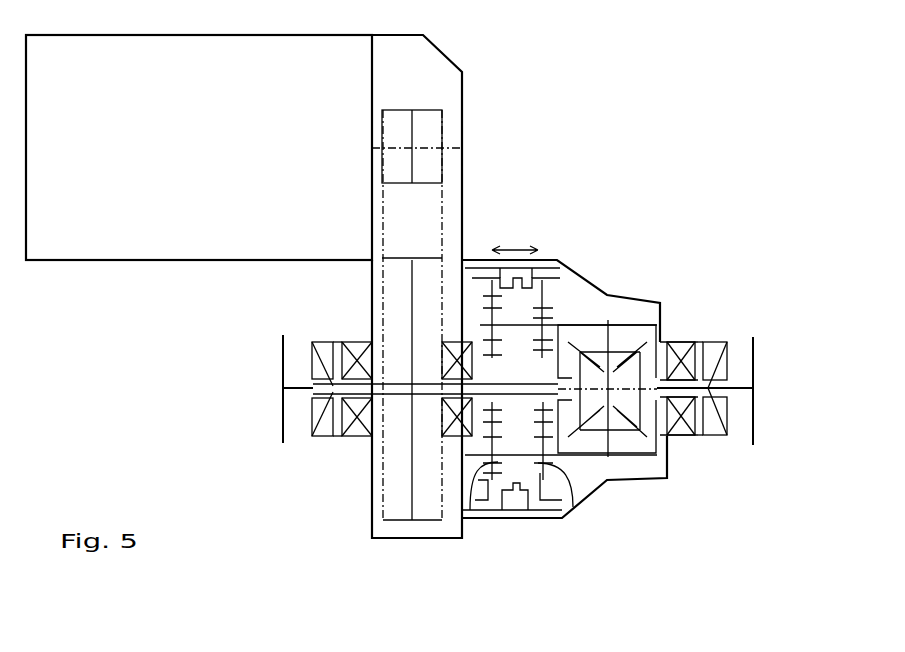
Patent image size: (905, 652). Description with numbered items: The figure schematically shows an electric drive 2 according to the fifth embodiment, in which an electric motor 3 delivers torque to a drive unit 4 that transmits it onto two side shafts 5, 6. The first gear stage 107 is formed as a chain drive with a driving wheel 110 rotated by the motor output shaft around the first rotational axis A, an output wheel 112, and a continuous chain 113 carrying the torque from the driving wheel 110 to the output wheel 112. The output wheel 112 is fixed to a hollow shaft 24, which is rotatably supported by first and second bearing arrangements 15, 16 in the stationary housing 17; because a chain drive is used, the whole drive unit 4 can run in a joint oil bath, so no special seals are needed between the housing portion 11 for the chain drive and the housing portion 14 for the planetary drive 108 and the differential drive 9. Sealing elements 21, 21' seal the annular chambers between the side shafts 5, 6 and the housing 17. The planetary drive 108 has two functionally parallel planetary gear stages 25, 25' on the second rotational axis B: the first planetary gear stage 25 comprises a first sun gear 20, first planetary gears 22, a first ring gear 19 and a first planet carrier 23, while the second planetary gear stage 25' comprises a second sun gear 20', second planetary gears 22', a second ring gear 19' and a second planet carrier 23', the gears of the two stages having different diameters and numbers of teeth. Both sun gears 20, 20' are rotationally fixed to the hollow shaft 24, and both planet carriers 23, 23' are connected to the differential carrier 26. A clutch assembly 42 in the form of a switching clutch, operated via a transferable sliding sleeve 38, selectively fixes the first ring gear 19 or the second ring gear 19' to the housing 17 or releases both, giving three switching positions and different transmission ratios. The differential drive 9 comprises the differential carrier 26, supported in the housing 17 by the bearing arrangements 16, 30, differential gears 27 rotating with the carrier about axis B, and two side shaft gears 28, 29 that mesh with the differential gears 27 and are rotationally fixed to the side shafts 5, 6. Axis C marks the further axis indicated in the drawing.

The electric drive 2 is at (651, 90).
The electric motor 3 is at (208, 157).
The drive unit 4 is at (545, 126).
The side shaft 5 is at (740, 390).
The side shaft 6 is at (292, 383).
The differential drive 9 is at (627, 463).
The housing portion 11 is at (464, 86).
The second housing portion 14 is at (646, 293).
The first bearing arrangement 15 is at (358, 347).
The second bearing arrangement 16 is at (440, 432).
The stationary housing 17 is at (464, 163).
The first ring gear 19 is at (465, 545).
The second ring gear 19' is at (582, 517).
The first sun gear 20 is at (561, 441).
The second sun gear 20' is at (568, 325).
The sealing element 21 is at (723, 365).
The sealing element 21' is at (320, 362).
The first planetary gears 22 is at (451, 532).
The second planetary gears 22' is at (604, 505).
The first planet carrier 23 is at (559, 329).
The second planet carrier 23' is at (608, 334).
The hollow shaft 24 is at (380, 438).
The first planetary gear stage 25 is at (512, 536).
The second planetary gear stage 25' is at (560, 526).
The differential carrier 26 is at (643, 455).
The differential gears 27 is at (618, 365).
The side shaft gear 28 is at (645, 358).
The side shaft gear 29 is at (590, 332).
The bearing arrangement 30 is at (685, 437).
The sliding sleeve 38 is at (522, 508).
The clutch assembly 42 is at (522, 240).
The first gear stage 107 is at (428, 92).
The planetary drive 108 is at (517, 484).
The driving wheel 110 is at (431, 194).
The output wheel 112 is at (396, 258).
The continuous chain 113 is at (432, 216).
The first rotational axis A is at (486, 148).
The second rotational axis B is at (605, 385).
The axis C is at (603, 447).